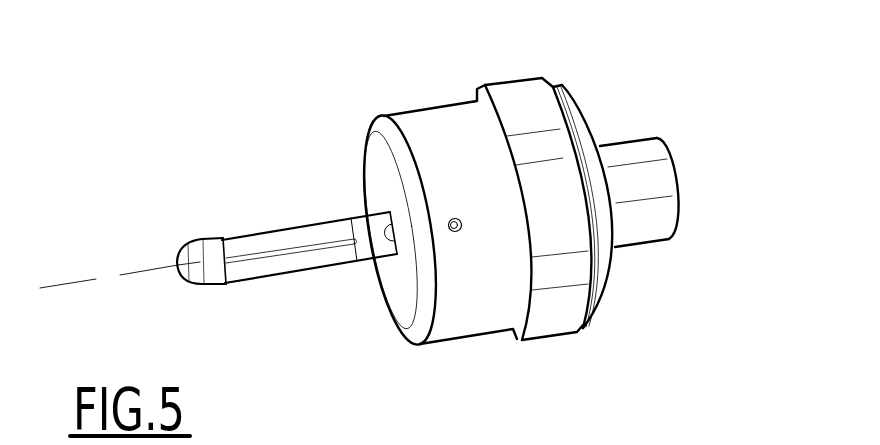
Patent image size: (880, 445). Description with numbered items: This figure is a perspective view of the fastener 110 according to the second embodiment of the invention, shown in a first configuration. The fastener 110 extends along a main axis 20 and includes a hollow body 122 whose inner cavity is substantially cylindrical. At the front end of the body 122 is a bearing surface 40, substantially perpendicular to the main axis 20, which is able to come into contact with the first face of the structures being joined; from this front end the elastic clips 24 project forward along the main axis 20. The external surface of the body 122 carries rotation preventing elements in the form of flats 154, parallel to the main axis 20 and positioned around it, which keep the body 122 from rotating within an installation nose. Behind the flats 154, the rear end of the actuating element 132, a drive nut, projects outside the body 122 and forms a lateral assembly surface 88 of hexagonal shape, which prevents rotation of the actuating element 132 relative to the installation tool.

The main axis 20 is at (108, 277).
The elastic clips 24 is at (278, 262).
The bearing surface 40 is at (378, 165).
The lateral assembly surface 88 is at (660, 212).
The fastener 110 is at (408, 193).
The body 122 is at (455, 122).
The actuating element 132 is at (666, 137).
The flats 154 is at (558, 178).